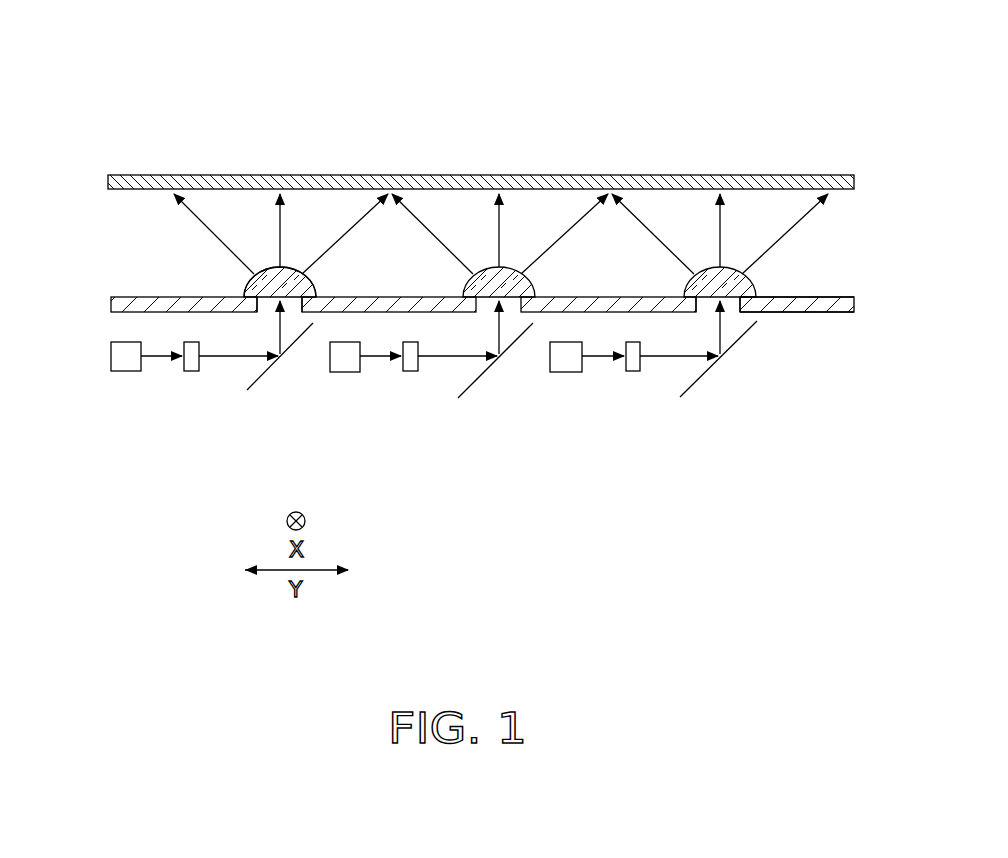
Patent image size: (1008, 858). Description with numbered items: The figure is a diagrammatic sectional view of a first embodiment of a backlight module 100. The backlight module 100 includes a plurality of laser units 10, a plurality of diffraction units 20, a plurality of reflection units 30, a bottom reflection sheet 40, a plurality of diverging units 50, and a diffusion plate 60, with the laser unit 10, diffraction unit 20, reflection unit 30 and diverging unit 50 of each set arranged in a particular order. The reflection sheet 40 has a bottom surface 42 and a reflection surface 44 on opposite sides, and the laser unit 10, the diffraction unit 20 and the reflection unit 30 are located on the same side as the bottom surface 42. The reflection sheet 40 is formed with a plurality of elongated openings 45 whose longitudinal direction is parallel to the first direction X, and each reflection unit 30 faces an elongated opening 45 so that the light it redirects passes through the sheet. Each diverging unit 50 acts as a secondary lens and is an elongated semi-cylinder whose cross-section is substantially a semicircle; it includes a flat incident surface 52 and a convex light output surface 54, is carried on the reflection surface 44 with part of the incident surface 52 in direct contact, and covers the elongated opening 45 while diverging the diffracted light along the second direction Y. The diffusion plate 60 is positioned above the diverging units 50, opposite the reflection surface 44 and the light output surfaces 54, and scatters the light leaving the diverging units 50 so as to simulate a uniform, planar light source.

The backlight module 100 is at (347, 55).
The laser unit 10 is at (123, 364).
The diffraction unit 20 is at (192, 372).
The reflection unit 30 is at (252, 390).
The bottom reflection sheet 40 is at (150, 297).
The bottom surface 42 is at (807, 313).
The reflection surface 44 is at (820, 296).
The elongated opening 45 is at (708, 312).
The diverging unit 50 is at (243, 285).
The incident surface 52 is at (270, 300).
The light output surface 54 is at (313, 282).
The diffusion plate 60 is at (215, 175).